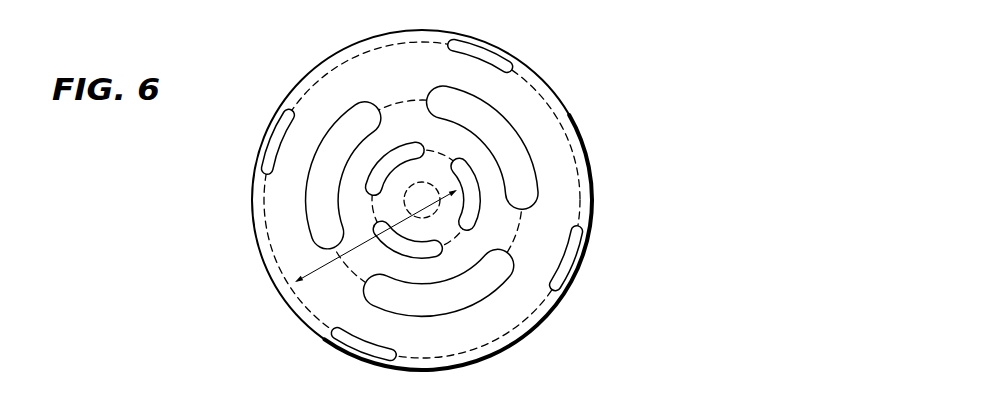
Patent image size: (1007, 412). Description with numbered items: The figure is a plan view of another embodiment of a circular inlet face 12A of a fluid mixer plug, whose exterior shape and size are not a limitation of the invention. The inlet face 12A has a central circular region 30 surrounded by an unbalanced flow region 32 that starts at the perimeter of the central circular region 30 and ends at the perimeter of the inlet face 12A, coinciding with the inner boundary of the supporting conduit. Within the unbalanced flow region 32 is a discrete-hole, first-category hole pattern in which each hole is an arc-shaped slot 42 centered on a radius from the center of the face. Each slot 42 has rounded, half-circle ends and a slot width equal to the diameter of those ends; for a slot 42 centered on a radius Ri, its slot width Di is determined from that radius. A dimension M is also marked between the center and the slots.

The arc-shaped slot 42 is at (342, 138).
The central circular region 30 is at (410, 201).
The unbalanced flow region 32 is at (297, 311).
The inlet face 12A is at (619, 56).
The slot width Di is at (457, 170).
The slot radius Ri is at (440, 198).
The dimension M is at (290, 284).